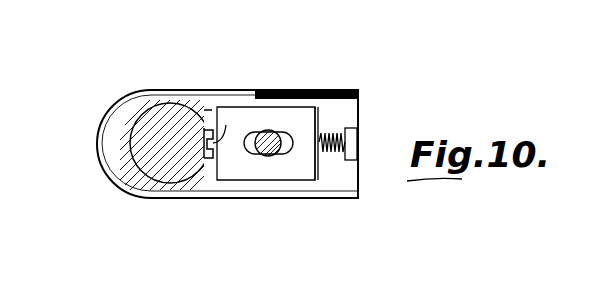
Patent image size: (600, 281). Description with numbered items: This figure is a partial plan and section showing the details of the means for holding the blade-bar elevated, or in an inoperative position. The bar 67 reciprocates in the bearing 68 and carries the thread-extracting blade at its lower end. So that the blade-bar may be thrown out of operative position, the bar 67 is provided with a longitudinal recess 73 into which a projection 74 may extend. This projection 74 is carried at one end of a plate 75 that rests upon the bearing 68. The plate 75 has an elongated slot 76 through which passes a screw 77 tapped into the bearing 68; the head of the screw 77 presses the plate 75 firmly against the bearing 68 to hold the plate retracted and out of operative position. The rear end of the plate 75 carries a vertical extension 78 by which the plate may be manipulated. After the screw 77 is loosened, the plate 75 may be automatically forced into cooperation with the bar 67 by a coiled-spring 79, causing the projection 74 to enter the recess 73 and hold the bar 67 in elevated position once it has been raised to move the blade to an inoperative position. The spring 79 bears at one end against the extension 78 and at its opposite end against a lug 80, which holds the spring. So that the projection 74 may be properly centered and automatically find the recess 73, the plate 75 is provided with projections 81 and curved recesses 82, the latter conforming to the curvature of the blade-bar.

The bar 67 is at (142, 148).
The bearing 68 is at (359, 101).
The longitudinal recess 73 is at (177, 160).
The projection 74 is at (235, 126).
The plate 75 is at (252, 178).
The elongated slot 76 is at (291, 155).
The screw 77 is at (273, 132).
The vertical extension 78 is at (325, 178).
The coiled-spring 79 is at (320, 131).
The lug 80 is at (357, 152).
The projections 81 is at (204, 110).
The curved recesses 82 is at (210, 112).